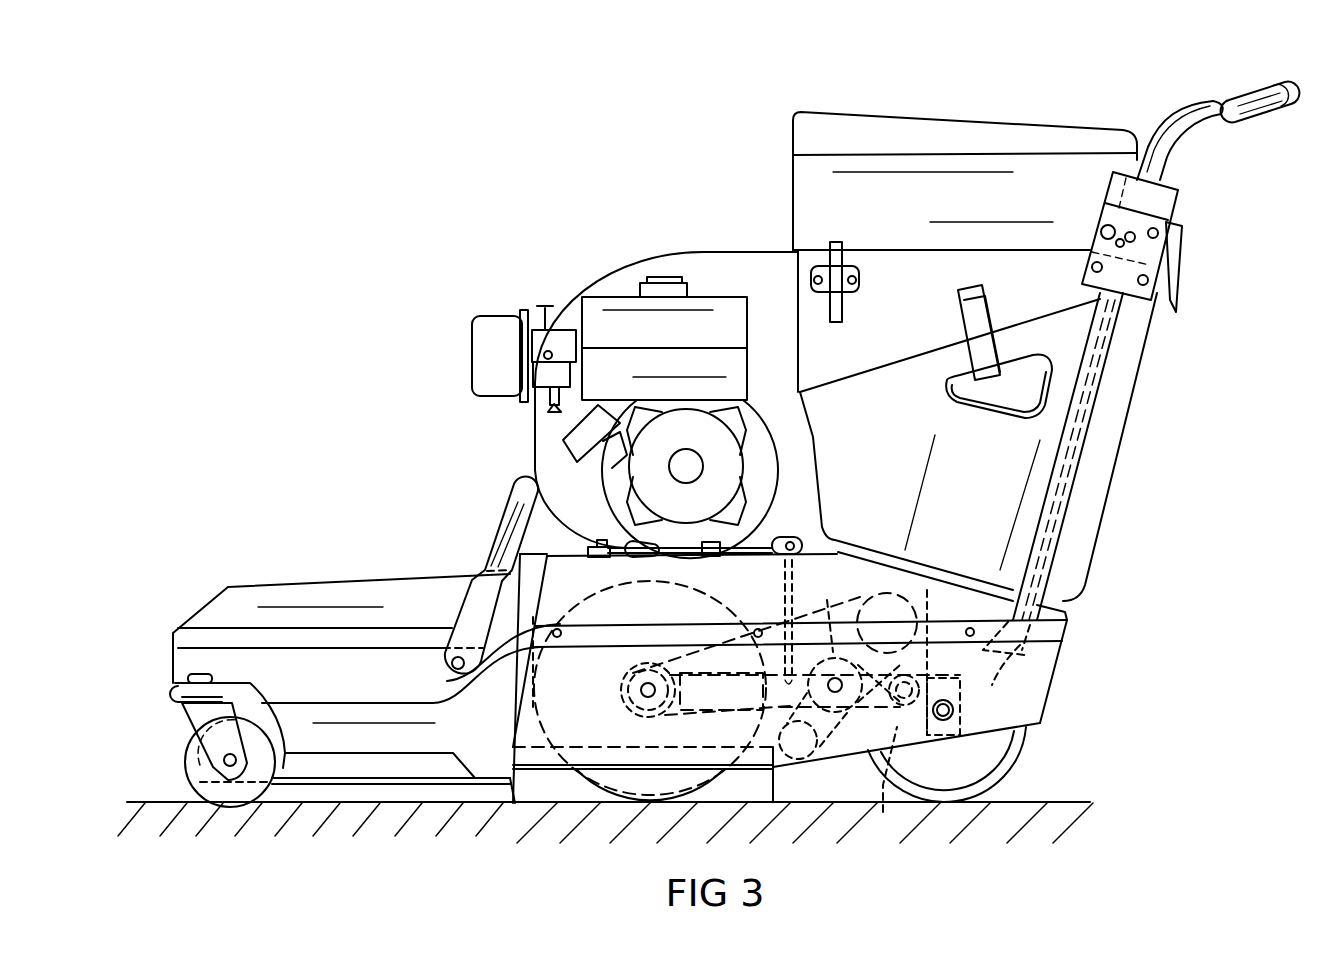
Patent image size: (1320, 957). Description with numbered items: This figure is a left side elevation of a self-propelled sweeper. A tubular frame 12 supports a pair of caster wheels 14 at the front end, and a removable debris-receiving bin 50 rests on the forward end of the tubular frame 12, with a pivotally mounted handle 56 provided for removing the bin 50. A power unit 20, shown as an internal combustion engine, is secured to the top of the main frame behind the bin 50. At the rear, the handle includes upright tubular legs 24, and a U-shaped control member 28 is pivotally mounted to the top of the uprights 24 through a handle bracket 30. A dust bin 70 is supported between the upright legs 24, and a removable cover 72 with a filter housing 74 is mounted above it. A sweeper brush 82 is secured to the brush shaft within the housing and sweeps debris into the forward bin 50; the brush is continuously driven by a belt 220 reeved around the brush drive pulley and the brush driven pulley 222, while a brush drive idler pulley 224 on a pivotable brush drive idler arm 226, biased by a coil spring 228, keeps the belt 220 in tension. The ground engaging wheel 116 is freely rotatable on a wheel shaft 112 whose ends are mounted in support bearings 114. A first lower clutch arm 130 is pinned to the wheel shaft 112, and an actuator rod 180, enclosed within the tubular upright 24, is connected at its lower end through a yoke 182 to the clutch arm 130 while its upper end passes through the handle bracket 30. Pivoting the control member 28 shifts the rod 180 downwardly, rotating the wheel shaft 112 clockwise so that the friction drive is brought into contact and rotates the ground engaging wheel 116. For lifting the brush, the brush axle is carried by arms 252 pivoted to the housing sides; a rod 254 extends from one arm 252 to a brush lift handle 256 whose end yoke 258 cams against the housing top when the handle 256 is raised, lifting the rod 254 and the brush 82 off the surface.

The tubular frame 12 is at (305, 692).
The caster wheels 14 is at (195, 775).
The power unit 20 is at (588, 274).
The tubular legs 24 is at (1100, 378).
The control member 28 is at (1247, 88).
The handle bracket 30 is at (1178, 246).
The debris-receiving bin 50 is at (352, 587).
The handle 56 is at (518, 483).
The dust bin 70 is at (1098, 455).
The removable cover 72 is at (1050, 310).
The filter housing 74 is at (935, 125).
The sweeper brush 82 is at (617, 782).
The wheel shaft 112 is at (948, 720).
The support bearings 114 is at (1033, 745).
The ground engaging wheel 116 is at (1003, 767).
The first lower clutch arm 130 is at (1040, 723).
The rod 180 is at (1058, 503).
The yoke 182 is at (1020, 703).
The belt 220 is at (776, 622).
The brush driven pulley 222 is at (630, 676).
The brush drive idler pulley 224 is at (787, 570).
The brush drive idler arm 226 is at (800, 760).
The coil spring 228 is at (880, 782).
The arms 252 is at (772, 705).
The rod 254 is at (797, 567).
The brush lift handle 256 is at (780, 503).
The yoke 258 is at (790, 533).